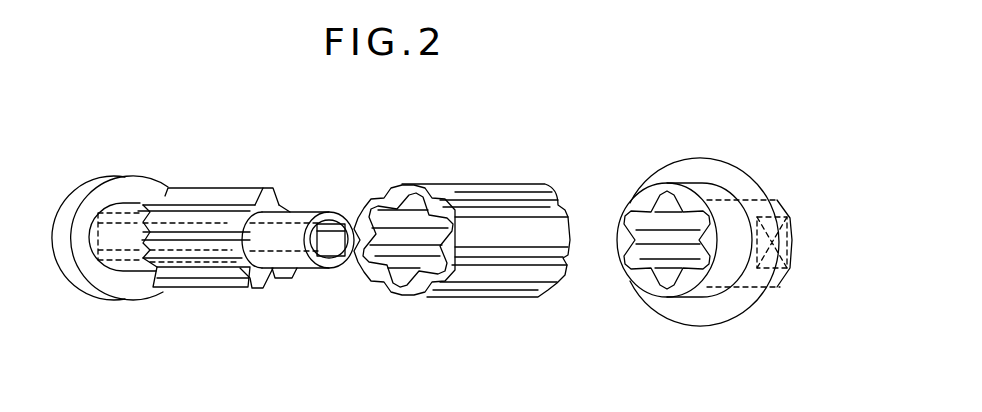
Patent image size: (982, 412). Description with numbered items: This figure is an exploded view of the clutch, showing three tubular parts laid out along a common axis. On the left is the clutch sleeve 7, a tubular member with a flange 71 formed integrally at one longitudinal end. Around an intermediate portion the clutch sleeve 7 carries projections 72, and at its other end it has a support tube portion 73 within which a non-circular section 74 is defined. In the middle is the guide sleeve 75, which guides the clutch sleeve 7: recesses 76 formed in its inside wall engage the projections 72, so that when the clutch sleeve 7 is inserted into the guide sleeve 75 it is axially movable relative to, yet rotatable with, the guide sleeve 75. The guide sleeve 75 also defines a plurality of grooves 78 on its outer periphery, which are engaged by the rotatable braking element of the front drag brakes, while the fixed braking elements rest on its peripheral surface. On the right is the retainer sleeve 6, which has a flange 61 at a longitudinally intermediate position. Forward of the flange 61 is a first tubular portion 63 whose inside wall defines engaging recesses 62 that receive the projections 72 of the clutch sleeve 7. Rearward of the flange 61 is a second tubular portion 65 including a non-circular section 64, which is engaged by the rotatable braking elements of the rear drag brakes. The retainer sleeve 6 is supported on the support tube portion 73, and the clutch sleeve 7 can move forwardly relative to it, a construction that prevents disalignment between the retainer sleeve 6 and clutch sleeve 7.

The retainer sleeve 6 is at (736, 152).
The flange 61 is at (706, 315).
The engaging recesses 62 is at (667, 191).
The first tubular portion 63 is at (697, 293).
The non-circular section 64 is at (789, 228).
The second tubular portion 65 is at (785, 278).
The clutch sleeve 7 is at (126, 171).
The flange 71 is at (106, 287).
The projections 72 is at (196, 214).
The support tube portion 73 is at (307, 208).
The non-circular section 74 is at (333, 250).
The guide sleeve 75 is at (543, 176).
The recesses 76 is at (420, 195).
The grooves 78 is at (490, 200).